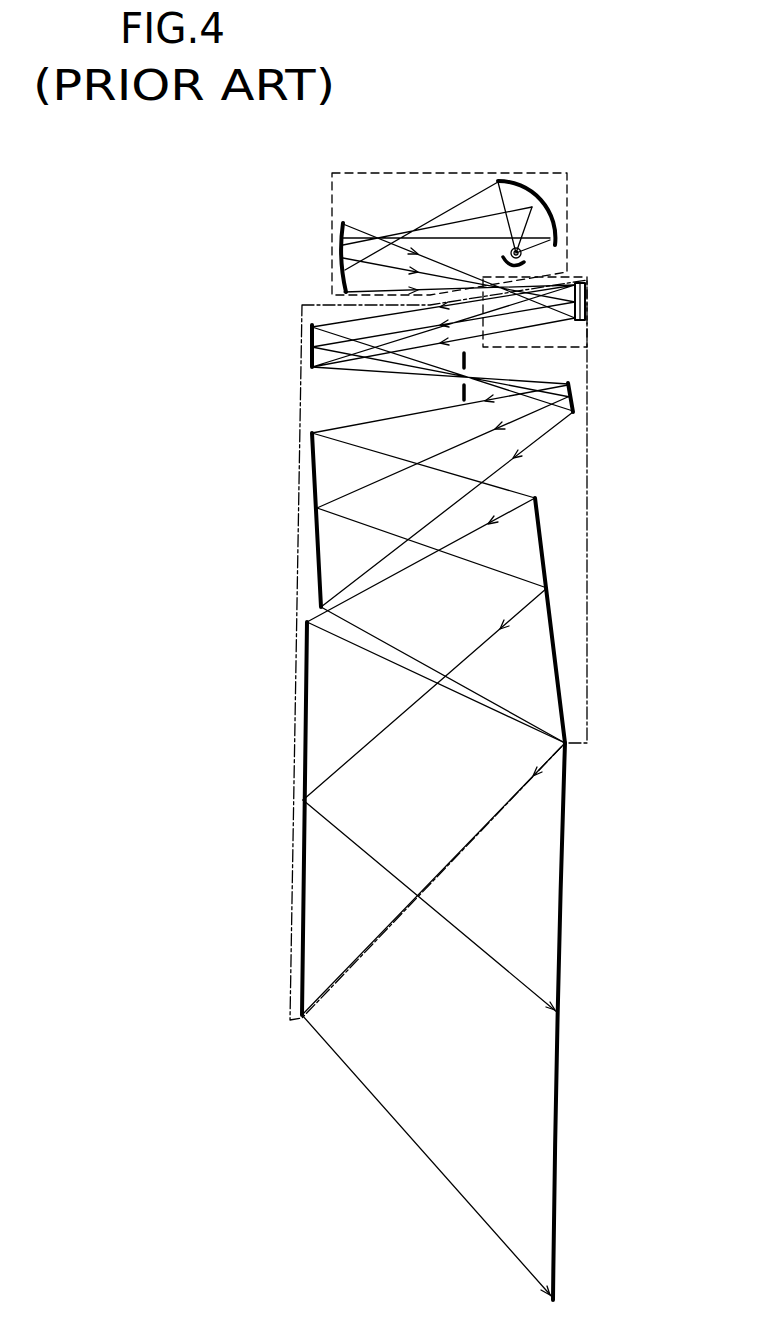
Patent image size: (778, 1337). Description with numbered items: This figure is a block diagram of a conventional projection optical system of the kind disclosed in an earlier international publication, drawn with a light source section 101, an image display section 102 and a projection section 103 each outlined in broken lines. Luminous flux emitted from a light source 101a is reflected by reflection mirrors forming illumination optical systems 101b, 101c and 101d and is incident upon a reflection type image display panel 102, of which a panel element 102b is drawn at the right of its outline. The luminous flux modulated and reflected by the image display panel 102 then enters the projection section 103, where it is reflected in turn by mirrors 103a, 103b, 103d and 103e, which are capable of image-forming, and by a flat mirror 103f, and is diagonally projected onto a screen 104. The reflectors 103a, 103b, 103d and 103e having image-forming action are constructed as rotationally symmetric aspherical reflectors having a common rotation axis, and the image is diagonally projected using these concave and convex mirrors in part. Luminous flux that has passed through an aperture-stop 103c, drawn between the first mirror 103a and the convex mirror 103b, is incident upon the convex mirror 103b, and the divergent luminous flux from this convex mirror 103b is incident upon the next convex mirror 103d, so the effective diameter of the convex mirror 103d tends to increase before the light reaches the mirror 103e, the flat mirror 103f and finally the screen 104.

The light source unit 101 is at (490, 171).
The light source 101a is at (512, 248).
The illumination optical system 101b is at (542, 257).
The illumination optical system 101c is at (545, 213).
The illumination optical system 101d is at (340, 243).
The reflection type image display panel 102 is at (592, 315).
The light modulator element 102b is at (588, 287).
The projection optical system 103 is at (584, 519).
The mirror 103a is at (310, 330).
The convex mirror 103b is at (575, 387).
The aperture-stop 103c is at (462, 390).
The convex mirror 103d is at (317, 528).
The mirror 103e is at (553, 645).
The flat mirror 103f is at (302, 900).
The screen 104 is at (557, 1160).